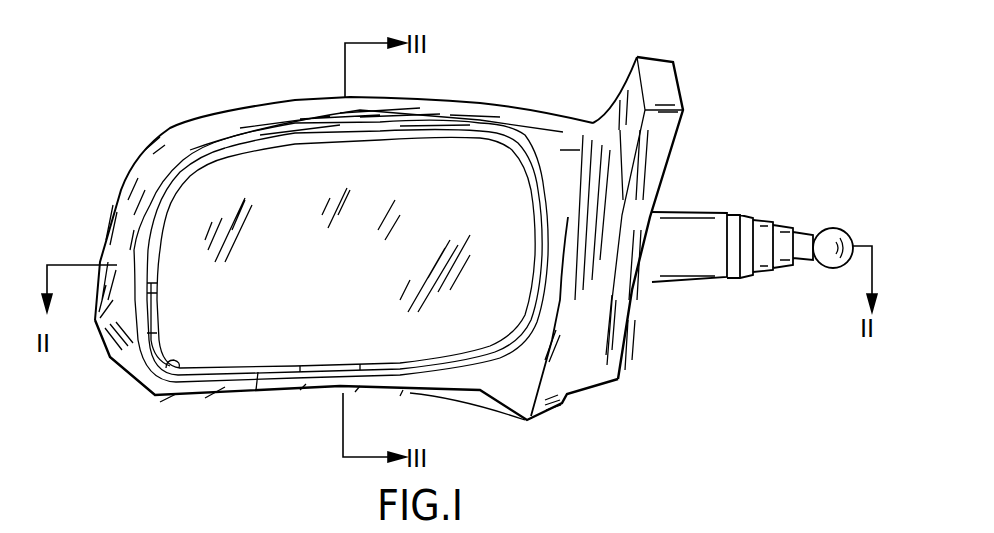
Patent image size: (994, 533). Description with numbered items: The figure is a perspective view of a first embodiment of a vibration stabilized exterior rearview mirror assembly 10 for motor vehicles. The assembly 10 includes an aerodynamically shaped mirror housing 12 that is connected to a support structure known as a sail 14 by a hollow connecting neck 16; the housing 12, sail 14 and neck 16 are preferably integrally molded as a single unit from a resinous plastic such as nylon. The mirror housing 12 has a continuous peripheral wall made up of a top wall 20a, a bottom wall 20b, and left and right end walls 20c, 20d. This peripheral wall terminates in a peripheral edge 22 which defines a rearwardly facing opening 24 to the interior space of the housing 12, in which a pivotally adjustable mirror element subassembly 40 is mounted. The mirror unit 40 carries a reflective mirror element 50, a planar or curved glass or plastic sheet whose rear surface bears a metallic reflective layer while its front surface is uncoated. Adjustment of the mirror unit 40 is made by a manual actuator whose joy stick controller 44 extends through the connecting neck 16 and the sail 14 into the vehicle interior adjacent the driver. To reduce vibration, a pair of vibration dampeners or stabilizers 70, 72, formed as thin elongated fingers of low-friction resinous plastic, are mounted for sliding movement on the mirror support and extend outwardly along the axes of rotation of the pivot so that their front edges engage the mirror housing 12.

The vibration stabilized exterior rearview mirror assembly 10 is at (535, 54).
The mirror housing 12 is at (227, 96).
The sail 14 is at (648, 155).
The connecting neck 16 is at (573, 142).
The top wall 20a is at (350, 98).
The bottom wall 20b is at (308, 384).
The left end wall 20c is at (110, 312).
The right end wall 20d is at (546, 308).
The peripheral edge 22 is at (210, 386).
The rearwardly facing opening 24 is at (153, 396).
The mirror element subassembly 40 is at (256, 400).
The joy stick controller 44 is at (777, 226).
The mirror element 50 is at (302, 251).
The vibration stabilizer 70 is at (150, 314).
The vibration stabilizer 72 is at (343, 366).